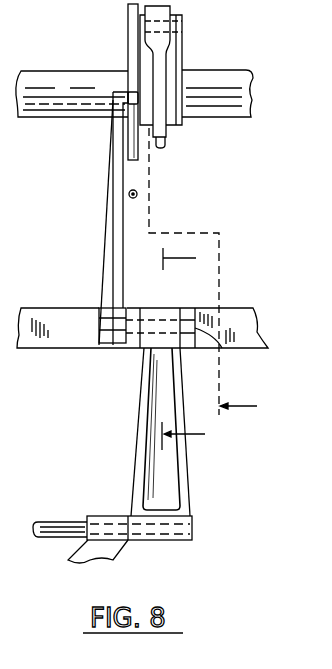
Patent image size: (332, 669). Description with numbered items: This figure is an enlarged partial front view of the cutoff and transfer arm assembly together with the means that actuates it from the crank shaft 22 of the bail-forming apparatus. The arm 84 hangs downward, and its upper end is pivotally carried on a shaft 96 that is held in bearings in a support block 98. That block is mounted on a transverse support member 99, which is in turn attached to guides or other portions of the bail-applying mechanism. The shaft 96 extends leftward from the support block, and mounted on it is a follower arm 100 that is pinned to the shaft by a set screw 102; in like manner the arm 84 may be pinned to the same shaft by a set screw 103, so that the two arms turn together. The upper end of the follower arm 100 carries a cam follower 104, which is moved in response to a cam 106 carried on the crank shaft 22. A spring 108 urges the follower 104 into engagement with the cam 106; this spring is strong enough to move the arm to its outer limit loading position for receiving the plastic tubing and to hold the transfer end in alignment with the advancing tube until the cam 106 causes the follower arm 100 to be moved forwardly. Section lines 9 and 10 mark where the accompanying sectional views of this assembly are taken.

The cam 106 is at (130, 20).
The cam follower 104 is at (130, 92).
The crank shaft 22 is at (76, 105).
The follower arm 100 is at (106, 218).
The spring 108 is at (137, 194).
The section line 10- 10 is at (187, 289).
The section line 9 is at (249, 405).
The transverse support member 99 is at (73, 312).
The set screw 103 is at (158, 326).
The set screw 102 is at (120, 324).
The support block 98 is at (188, 340).
The shaft 96 is at (223, 347).
The arm 84 is at (186, 478).